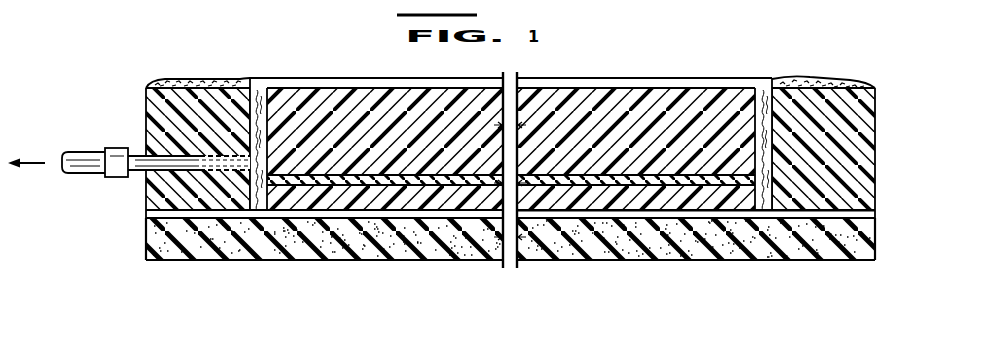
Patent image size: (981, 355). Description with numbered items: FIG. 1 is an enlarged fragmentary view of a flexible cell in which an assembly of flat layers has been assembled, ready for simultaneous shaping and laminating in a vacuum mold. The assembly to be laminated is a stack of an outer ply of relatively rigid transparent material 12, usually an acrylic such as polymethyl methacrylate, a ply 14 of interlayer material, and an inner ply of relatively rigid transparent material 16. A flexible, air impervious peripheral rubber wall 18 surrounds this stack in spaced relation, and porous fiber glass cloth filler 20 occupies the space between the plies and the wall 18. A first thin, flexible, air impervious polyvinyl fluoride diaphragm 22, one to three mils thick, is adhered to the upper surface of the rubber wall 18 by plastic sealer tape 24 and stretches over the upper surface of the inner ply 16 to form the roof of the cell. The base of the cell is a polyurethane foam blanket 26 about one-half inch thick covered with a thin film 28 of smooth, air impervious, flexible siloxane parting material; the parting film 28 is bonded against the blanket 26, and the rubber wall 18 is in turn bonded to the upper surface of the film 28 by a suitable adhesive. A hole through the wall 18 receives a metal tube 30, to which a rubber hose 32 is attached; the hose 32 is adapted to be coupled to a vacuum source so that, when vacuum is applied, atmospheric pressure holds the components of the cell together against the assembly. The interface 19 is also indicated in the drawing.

The outer ply of relatively rigid transparent material 12 is at (456, 200).
The ply of interlayer material 14 is at (393, 184).
The inner ply of relatively rigid transparent material 16 is at (330, 90).
The peripheral rubber wall 18 is at (152, 123).
The interface 19 is at (660, 212).
The porous fiber glass cloth filler 20 is at (258, 88).
The first diaphragm 22 is at (647, 82).
The plastic sealer tape 24 is at (806, 79).
The polyurethane foam blanket 26 is at (305, 260).
The parting material film 28 is at (872, 213).
The metal tube 30 is at (142, 175).
The rubber hose 32 is at (68, 174).